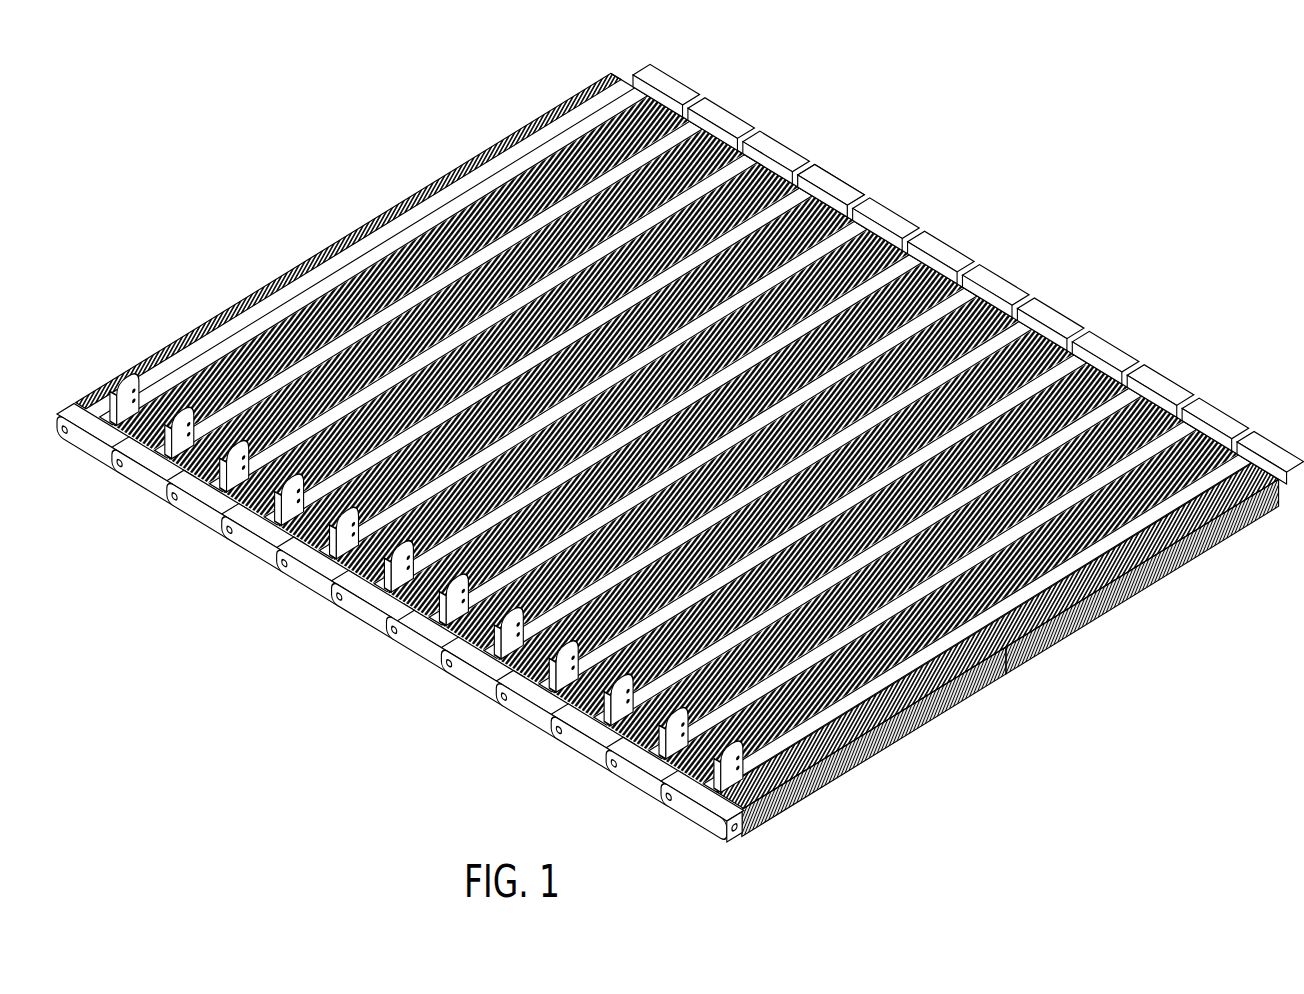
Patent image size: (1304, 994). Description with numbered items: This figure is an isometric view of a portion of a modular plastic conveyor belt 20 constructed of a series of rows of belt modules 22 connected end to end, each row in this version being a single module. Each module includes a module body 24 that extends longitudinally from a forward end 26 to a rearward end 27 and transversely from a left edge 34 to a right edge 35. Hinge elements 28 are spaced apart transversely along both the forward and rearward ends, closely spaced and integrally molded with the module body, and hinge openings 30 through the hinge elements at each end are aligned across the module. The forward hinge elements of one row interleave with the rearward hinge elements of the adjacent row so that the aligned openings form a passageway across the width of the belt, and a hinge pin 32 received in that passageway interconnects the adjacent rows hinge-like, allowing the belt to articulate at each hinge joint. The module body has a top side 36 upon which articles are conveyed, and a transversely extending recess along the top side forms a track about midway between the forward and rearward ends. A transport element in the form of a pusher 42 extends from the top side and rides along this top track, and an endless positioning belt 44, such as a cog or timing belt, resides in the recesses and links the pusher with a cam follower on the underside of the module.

The belt 20 is at (1029, 112).
The belt module 22 is at (1107, 356).
The module body 24 is at (947, 683).
The forward end 26 is at (1177, 571).
The rearward end 27 is at (517, 142).
The hinge elements 28 is at (205, 322).
The hinge openings 30 is at (733, 813).
The hinge pin 32 is at (664, 801).
The left edge 34 is at (361, 608).
The right edge 35 is at (818, 180).
The top side 36 is at (662, 106).
The pusher 42 is at (264, 514).
The positioning belt 44 is at (747, 155).